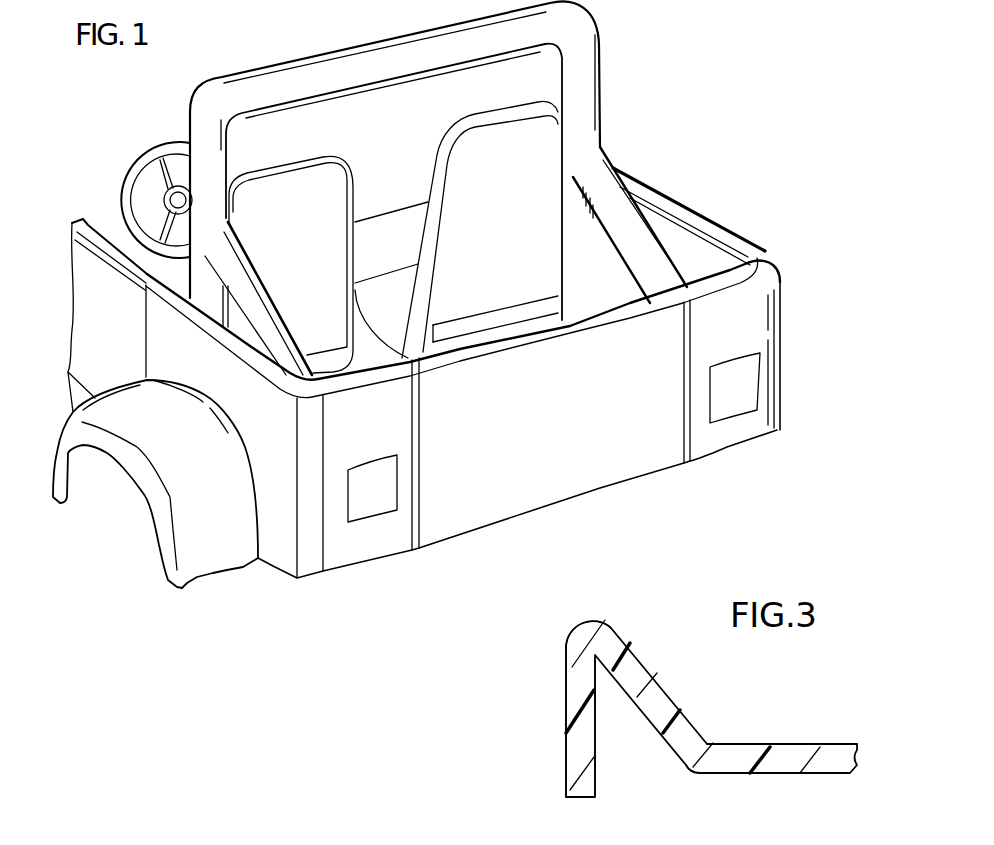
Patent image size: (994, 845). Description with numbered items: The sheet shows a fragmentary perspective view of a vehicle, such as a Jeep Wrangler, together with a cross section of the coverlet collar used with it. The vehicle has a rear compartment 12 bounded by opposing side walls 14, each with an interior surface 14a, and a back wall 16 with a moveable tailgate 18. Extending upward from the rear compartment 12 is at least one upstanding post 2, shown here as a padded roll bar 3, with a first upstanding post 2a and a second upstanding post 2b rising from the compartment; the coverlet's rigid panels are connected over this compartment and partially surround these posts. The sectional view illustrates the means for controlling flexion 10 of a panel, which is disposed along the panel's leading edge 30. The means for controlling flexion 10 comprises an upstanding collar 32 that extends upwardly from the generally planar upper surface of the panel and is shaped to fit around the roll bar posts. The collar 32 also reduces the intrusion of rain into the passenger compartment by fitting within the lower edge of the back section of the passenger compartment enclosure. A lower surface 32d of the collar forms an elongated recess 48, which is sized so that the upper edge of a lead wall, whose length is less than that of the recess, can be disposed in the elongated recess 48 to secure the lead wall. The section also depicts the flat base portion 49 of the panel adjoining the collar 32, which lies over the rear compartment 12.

In FIG. 1, the upstanding post 2 is at (465, 234).
In FIG. 1, the first upstanding post 2a is at (287, 322).
In FIG. 1, the second upstanding post 2b is at (658, 228).
In FIG. 1, the padded roll bar 3 is at (603, 70).
In FIG. 3, the means for controlling flexion 10 is at (660, 660).
In FIG. 1, the rear compartment 12 is at (725, 268).
In FIG. 1, the opposing side walls 14 is at (222, 330).
In FIG. 1, the interior surface 14a is at (662, 236).
In FIG. 1, the back wall 16 is at (393, 439).
In FIG. 1, the moveable tailgate 18 is at (632, 447).
In FIG. 3, the leading edge 30 is at (595, 612).
In FIG. 3, the upstanding collar 32 is at (565, 682).
In FIG. 3, the lower surface of the collar 32d is at (660, 737).
In FIG. 3, the elongated recess 48 is at (620, 775).
In FIG. 3, the base flange 49 is at (797, 750).